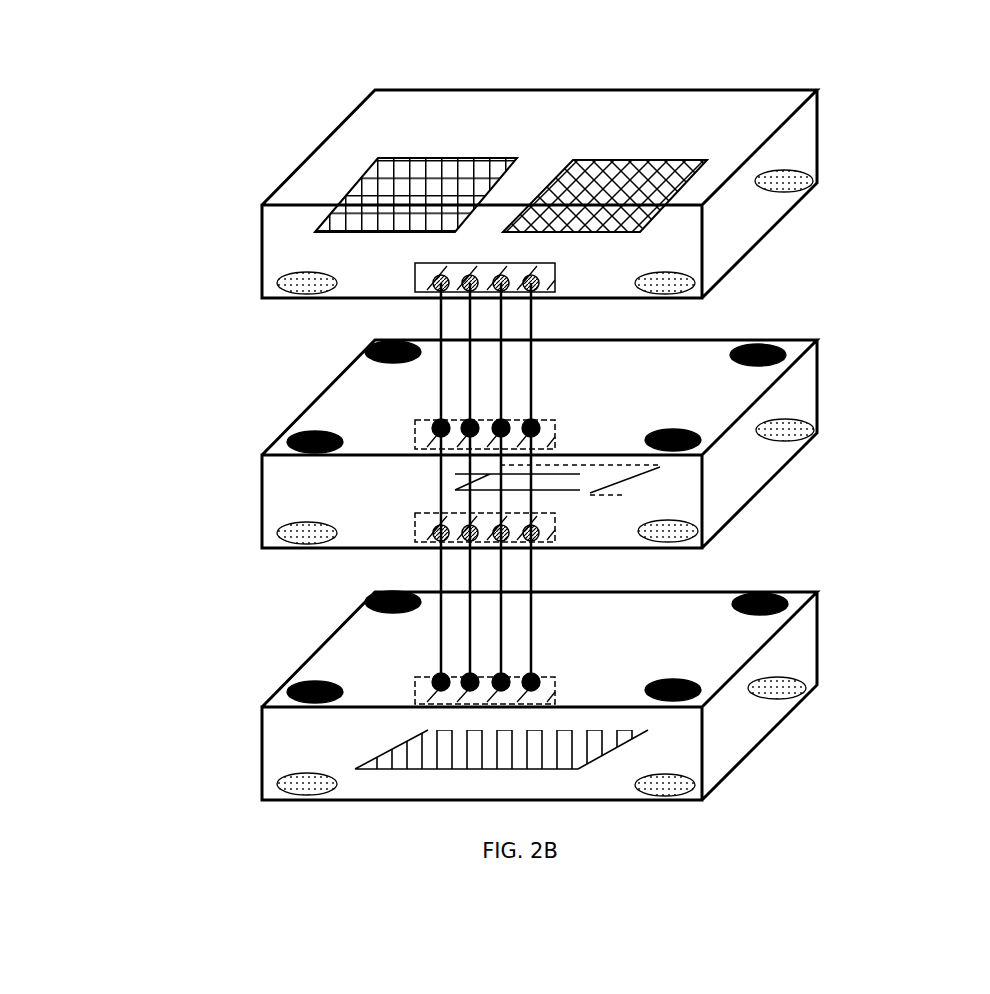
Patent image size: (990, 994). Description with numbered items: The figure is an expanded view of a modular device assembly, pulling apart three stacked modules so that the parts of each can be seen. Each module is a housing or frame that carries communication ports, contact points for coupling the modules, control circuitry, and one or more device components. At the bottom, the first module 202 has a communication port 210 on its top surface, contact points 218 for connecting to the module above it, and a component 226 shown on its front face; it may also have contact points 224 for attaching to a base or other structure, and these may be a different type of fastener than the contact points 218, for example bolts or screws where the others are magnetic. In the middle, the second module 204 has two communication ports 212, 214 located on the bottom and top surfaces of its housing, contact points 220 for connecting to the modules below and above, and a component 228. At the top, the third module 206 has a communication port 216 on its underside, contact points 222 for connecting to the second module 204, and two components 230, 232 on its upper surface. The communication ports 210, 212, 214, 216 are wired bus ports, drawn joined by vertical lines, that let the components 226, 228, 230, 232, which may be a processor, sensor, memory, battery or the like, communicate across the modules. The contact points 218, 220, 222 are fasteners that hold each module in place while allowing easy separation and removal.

The first module 202 is at (355, 603).
The second module 204 is at (355, 355).
The third module 206 is at (367, 102).
The communication port 210 is at (417, 688).
The communication port 212 is at (425, 530).
The communication port 214 is at (413, 432).
The communication port 216 is at (413, 273).
The contact points 218 is at (700, 687).
The contact points 220 is at (697, 530).
The contact points 222 is at (897, 164).
The contact points 224 is at (800, 700).
The component 226 is at (578, 772).
The component 228 is at (475, 482).
The component 230 is at (435, 158).
The component 232 is at (641, 158).